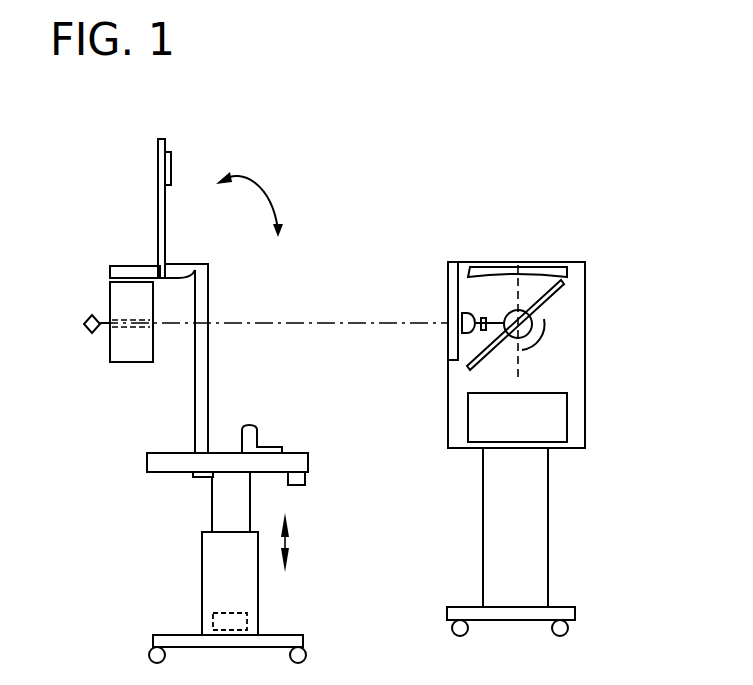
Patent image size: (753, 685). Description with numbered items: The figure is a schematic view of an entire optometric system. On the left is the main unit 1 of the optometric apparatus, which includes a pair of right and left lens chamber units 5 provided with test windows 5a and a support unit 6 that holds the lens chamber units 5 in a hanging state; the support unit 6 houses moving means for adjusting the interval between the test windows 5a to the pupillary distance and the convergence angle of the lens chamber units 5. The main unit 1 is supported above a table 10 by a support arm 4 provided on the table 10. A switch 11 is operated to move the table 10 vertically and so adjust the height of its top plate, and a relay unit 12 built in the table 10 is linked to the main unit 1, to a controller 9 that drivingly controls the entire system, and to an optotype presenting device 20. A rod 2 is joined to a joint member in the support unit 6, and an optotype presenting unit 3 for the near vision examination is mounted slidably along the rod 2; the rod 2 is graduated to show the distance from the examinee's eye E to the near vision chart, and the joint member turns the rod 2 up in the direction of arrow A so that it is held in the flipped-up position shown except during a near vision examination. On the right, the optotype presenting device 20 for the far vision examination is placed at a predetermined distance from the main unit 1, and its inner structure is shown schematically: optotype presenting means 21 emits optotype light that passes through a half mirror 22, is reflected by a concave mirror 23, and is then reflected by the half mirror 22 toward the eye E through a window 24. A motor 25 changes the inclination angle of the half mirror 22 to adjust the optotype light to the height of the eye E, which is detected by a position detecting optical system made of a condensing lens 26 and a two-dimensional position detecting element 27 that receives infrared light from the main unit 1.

The main unit 1 is at (97, 255).
The rod 2 is at (167, 218).
The optotype presenting unit 3 is at (172, 160).
The support arm 4 is at (210, 292).
The lens chamber unit 5 is at (108, 295).
The test window 5a is at (152, 325).
The support unit 6 is at (128, 272).
The controller 9 is at (260, 433).
The table 10 is at (202, 557).
The switch 11 is at (305, 480).
The relay unit 12 is at (213, 617).
The optotype presenting device 20 is at (588, 285).
The optotype presenting means 21 is at (567, 420).
The half mirror 22 is at (556, 290).
The concave mirror 23 is at (558, 267).
The window 24 is at (450, 272).
The motor 25 is at (525, 307).
The condensing lens 26 is at (462, 317).
The two-dimensional position detecting element 27 is at (483, 318).
The arrow A is at (251, 198).
The examinee's eye E is at (82, 337).